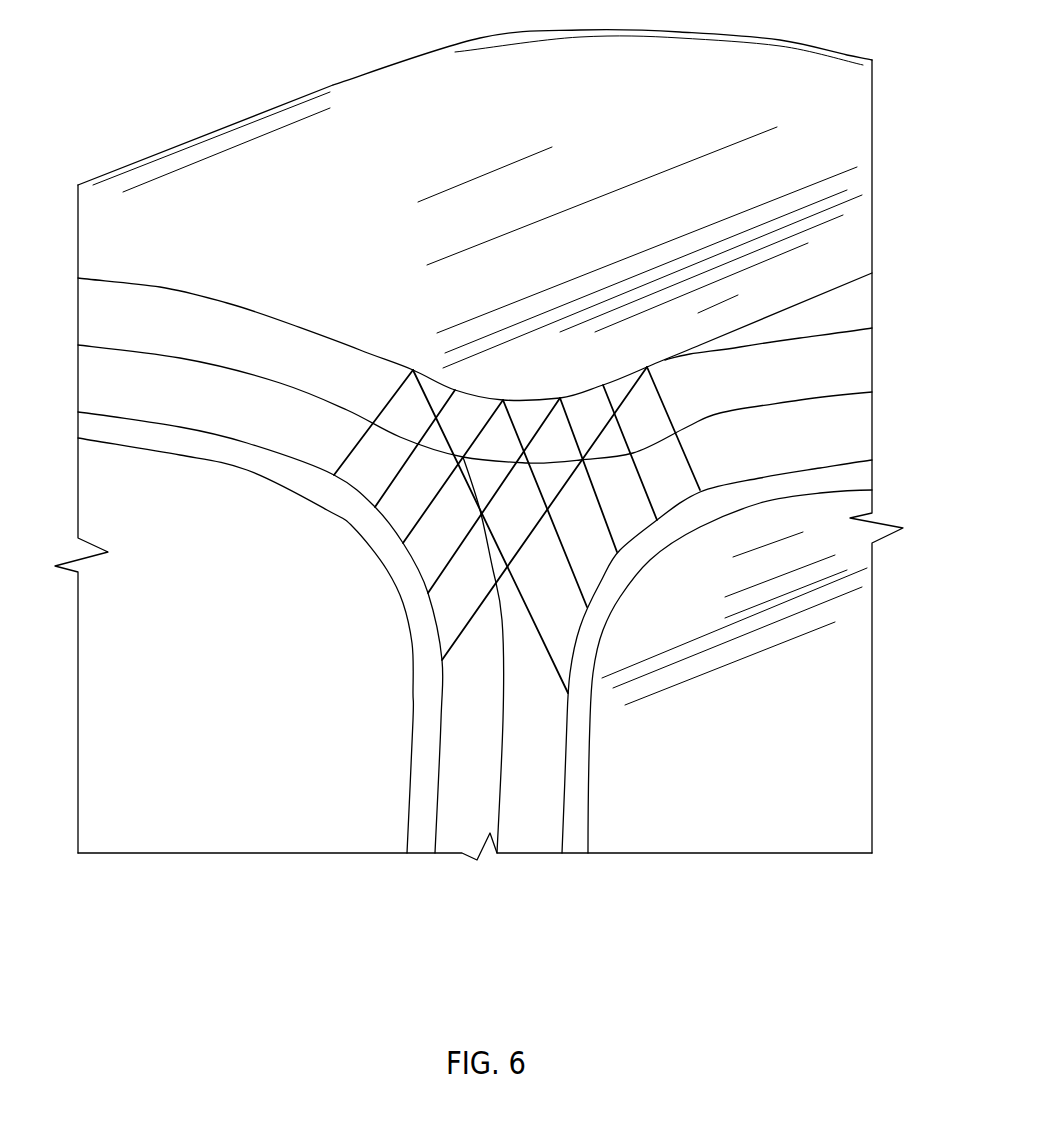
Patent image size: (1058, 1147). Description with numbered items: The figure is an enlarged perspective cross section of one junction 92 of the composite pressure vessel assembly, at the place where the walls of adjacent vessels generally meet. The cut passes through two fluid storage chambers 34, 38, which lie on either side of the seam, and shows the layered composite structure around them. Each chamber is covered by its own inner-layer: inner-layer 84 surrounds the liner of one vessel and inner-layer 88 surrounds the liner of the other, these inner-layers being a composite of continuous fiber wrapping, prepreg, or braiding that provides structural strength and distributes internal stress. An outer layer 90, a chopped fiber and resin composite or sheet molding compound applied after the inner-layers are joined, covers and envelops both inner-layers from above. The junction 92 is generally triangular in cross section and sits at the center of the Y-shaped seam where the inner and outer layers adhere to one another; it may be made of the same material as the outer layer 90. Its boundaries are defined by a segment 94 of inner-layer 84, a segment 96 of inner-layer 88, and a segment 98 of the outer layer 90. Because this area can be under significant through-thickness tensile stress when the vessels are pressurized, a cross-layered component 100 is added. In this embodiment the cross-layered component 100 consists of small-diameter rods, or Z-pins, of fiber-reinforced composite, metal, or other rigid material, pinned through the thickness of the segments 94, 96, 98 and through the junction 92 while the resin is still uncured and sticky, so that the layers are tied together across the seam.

The chamber 34 is at (230, 717).
The chamber 38 is at (760, 749).
The inner-layer 84 is at (462, 855).
The inner-layer 88 is at (533, 855).
The outer layer 90 is at (887, 360).
The junction 92 is at (529, 523).
The segment 94 is at (430, 547).
The segment 96 is at (587, 545).
The segment 98 is at (532, 417).
The cross-layered component 100 is at (355, 447).